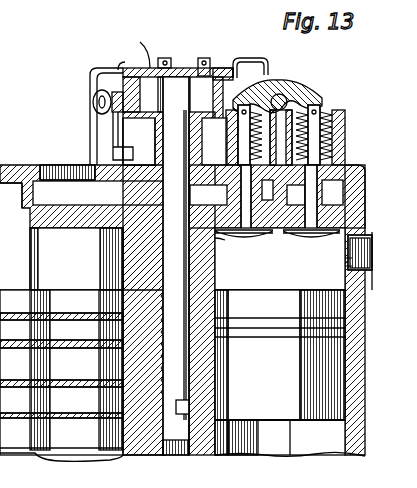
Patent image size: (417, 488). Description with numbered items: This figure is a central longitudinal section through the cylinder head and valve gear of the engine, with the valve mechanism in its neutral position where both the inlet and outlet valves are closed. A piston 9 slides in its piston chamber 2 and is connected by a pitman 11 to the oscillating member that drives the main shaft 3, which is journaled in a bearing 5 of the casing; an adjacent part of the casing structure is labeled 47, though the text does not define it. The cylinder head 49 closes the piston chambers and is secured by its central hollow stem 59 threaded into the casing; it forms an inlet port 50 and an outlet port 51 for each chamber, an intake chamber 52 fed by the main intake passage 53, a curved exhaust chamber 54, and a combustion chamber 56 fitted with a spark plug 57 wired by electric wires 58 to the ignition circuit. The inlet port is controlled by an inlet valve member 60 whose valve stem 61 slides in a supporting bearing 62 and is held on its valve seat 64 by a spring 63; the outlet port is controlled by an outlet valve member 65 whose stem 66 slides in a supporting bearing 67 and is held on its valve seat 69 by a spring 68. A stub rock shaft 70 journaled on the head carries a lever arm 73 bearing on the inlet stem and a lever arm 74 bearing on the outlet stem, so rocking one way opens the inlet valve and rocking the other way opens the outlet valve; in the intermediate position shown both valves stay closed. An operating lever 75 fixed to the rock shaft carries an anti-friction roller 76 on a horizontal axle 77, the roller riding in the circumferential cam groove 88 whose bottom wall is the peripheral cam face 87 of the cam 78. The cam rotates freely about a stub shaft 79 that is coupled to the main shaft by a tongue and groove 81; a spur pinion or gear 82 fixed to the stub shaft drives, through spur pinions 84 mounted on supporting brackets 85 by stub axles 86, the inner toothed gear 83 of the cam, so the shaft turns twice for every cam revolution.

The piston chamber 2 is at (345, 450).
The main driving or driven shaft 3 is at (218, 416).
The bearing 5 is at (218, 388).
The piston 9 is at (280, 372).
The pitman 11 is at (290, 436).
The cooling fin housing 47 is at (61, 256).
The cylinder head 49 is at (24, 165).
The inlet port 50 is at (185, 212).
The outlet port 51 is at (332, 192).
The intake chamber 52 is at (278, 232).
The main intake passage 53 is at (60, 165).
The exhaust chamber 54 is at (245, 236).
The combustion chamber 56 is at (318, 280).
The spark plug 57 is at (340, 260).
The electric wires 58 is at (99, 193).
The central hollow stem 59 is at (232, 326).
The inlet valve member 60 is at (180, 405).
The inlet valve stem 61 is at (243, 200).
The supporting bearing 62 is at (205, 182).
The inlet valve spring 63 is at (208, 283).
The inlet valve seat 64 is at (176, 290).
The outlet valve member 65 is at (310, 236).
The outlet valve stem 66 is at (318, 198).
The supporting bearing 67 is at (343, 137).
The outlet valve spring 68 is at (330, 132).
The outlet valve seat 69 is at (347, 310).
The stub rock shaft 70 is at (90, 96).
The valve-operating lever arm 73 is at (255, 72).
The valve-operating lever arm 74 is at (316, 96).
The operating lever 75 is at (113, 121).
The anti-friction roller 76 is at (90, 80).
The horizontal axle 77 is at (110, 103).
The cam 78 is at (144, 266).
The stub shaft 79 is at (172, 247).
The groove 81 is at (140, 452).
The spur pinion or gear 82 is at (165, 58).
The inner toothed gear 83 is at (128, 70).
The spur pinion 84 is at (218, 70).
The supporting bracket 85 is at (118, 70).
The stub shaft or axle 86 is at (145, 44).
The peripheral cam face 87 is at (261, 122).
The circumferential cam groove 88 is at (233, 76).